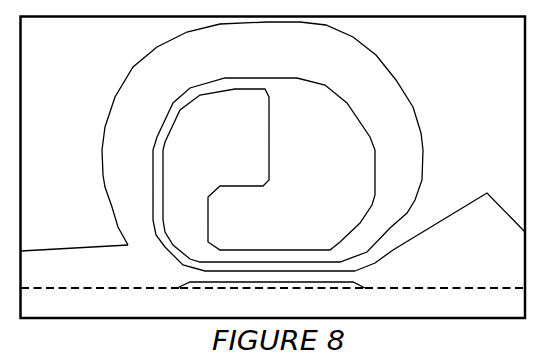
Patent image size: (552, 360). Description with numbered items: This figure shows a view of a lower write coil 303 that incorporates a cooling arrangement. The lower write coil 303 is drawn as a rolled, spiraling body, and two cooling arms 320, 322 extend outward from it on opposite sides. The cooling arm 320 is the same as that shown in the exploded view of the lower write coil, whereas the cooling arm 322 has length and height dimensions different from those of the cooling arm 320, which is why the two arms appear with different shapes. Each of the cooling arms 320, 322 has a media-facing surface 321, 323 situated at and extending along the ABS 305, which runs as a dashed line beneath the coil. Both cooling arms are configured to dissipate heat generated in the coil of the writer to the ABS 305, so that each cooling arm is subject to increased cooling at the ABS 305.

The lower write coil 303 is at (374, 63).
The ABS 305 is at (282, 288).
The cooling arm 320 is at (62, 262).
The media-facing surface 321 is at (144, 289).
The cooling arm 322 is at (490, 201).
The media-facing surface 323 is at (420, 289).